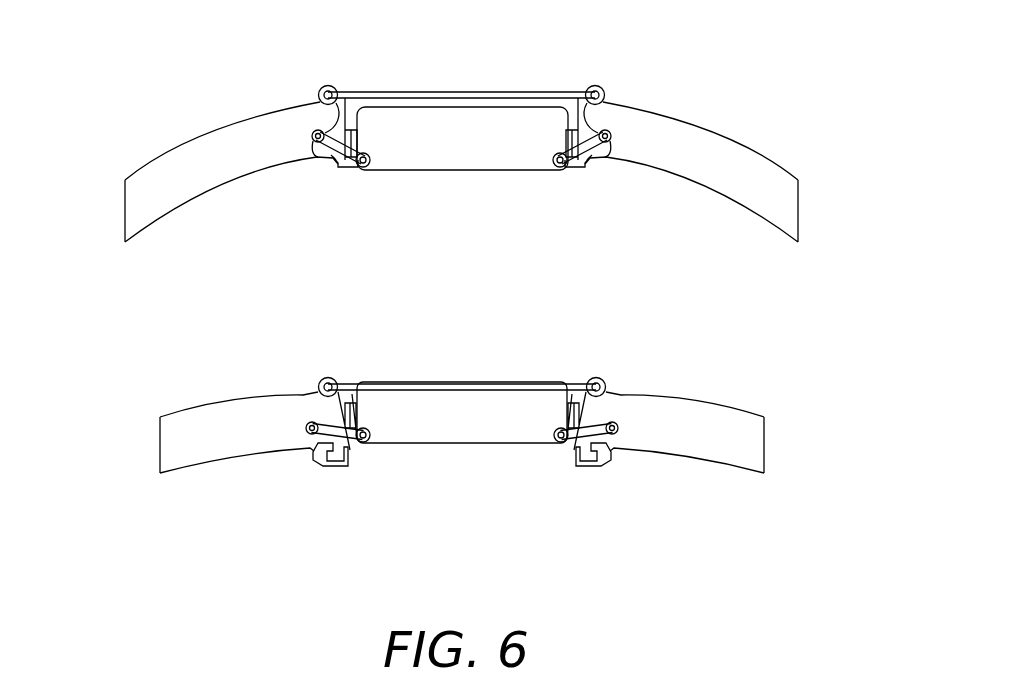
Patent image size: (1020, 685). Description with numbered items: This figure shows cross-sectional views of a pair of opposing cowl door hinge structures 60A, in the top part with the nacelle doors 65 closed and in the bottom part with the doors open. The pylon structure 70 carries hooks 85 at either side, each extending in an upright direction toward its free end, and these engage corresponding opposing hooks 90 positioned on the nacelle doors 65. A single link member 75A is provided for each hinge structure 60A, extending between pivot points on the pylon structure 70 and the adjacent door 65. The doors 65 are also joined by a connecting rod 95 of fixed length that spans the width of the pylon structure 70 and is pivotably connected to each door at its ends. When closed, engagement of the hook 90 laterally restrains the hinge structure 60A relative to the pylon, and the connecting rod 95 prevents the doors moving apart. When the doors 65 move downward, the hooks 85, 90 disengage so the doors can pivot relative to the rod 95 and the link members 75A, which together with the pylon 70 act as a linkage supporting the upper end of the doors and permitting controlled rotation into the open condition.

The hinge structure 60A is at (322, 203).
The nacelle door 65 is at (126, 190).
The pylon structure 70 is at (486, 125).
The link member 75A is at (318, 106).
The hook 85 is at (349, 130).
The hook 90 is at (342, 170).
The connecting rod 95 is at (400, 92).